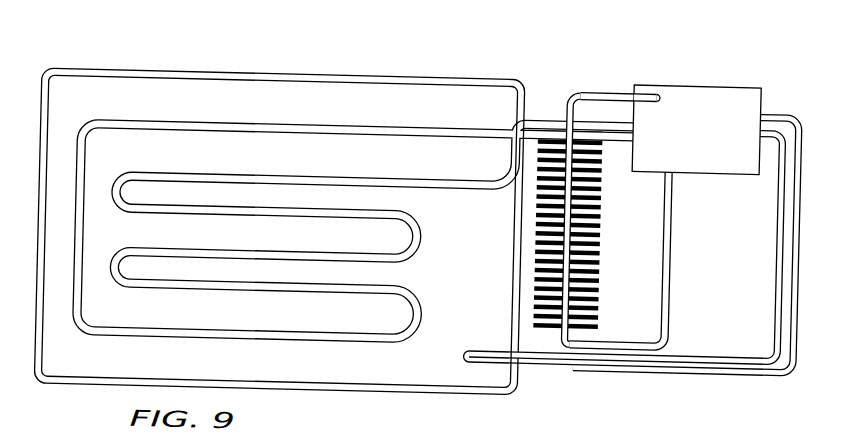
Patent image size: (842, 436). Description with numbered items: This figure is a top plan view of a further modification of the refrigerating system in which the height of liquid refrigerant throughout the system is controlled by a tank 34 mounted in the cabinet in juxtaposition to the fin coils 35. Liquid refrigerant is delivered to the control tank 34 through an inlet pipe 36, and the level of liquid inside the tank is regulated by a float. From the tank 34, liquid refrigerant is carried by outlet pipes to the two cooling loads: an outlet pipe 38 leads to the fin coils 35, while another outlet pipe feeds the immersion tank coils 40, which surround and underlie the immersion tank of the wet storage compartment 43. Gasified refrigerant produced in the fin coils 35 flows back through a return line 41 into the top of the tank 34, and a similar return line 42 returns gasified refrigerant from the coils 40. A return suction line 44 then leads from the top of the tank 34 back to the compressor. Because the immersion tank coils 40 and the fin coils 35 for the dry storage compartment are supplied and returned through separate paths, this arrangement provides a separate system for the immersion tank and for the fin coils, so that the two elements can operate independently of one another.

The tank 34 is at (694, 86).
The fin coils 35 is at (600, 202).
The inlet pipe 36 is at (782, 235).
The outlet pipe 38 is at (672, 250).
The immersion tank coils 40 is at (217, 73).
The return line 41 is at (597, 84).
The return line 42 is at (549, 108).
The wet storage compartment 43 is at (150, 372).
The return suction line 44 is at (625, 349).